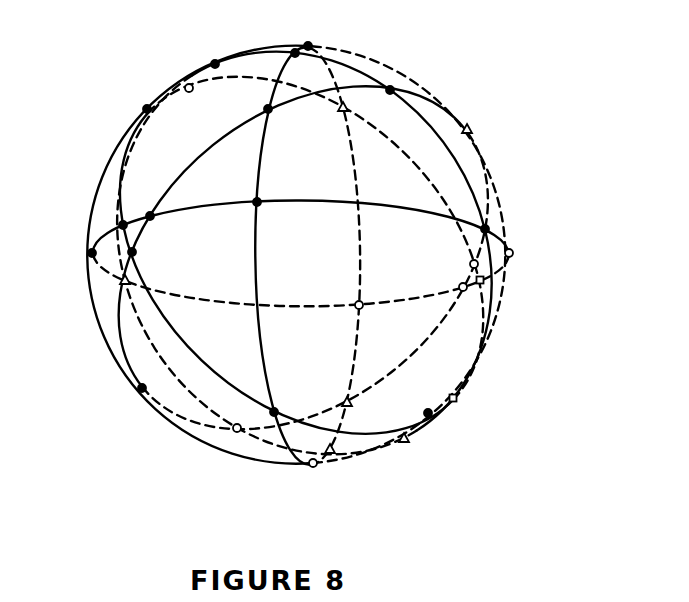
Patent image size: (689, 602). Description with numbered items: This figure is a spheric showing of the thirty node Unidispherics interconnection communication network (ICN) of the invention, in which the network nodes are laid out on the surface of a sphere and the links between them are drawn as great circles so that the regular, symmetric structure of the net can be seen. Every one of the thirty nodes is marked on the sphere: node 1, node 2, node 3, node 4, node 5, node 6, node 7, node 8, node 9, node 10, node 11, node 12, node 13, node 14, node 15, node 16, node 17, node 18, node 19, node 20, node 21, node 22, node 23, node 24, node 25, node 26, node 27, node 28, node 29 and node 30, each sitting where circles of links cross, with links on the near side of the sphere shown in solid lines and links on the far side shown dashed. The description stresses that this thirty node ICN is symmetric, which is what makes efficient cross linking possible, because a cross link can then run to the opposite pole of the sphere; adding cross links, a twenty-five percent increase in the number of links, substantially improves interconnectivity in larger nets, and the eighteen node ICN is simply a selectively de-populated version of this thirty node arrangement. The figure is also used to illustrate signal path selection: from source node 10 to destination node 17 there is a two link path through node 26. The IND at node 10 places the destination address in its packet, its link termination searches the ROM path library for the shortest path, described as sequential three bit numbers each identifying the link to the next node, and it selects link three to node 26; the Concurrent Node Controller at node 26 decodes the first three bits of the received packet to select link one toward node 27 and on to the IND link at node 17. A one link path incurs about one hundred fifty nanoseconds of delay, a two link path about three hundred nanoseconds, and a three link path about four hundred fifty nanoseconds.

The node 1 is at (310, 45).
The node 2 is at (294, 51).
The node 3 is at (268, 112).
The node 4 is at (259, 204).
The node 5 is at (276, 410).
The node 6 is at (313, 466).
The node 7 is at (333, 452).
The node 8 is at (345, 400).
The node 9 is at (361, 304).
The source node 10 is at (342, 110).
The node 11 is at (91, 253).
The node 12 is at (121, 224).
The node 13 is at (149, 214).
The node 14 is at (487, 228).
The node 15 is at (511, 253).
The node 16 is at (482, 282).
The destination node 17 is at (461, 286).
The node 18 is at (123, 282).
The node 19 is at (213, 62).
The node 20 is at (145, 110).
The node 21 is at (141, 391).
The node 22 is at (406, 441).
The node 23 is at (456, 400).
The node 24 is at (135, 253).
The node 25 is at (426, 412).
The intermediate node 26 is at (472, 264).
The node 27 is at (191, 90).
The node 28 is at (237, 431).
The node 29 is at (390, 93).
The node 30 is at (470, 129).